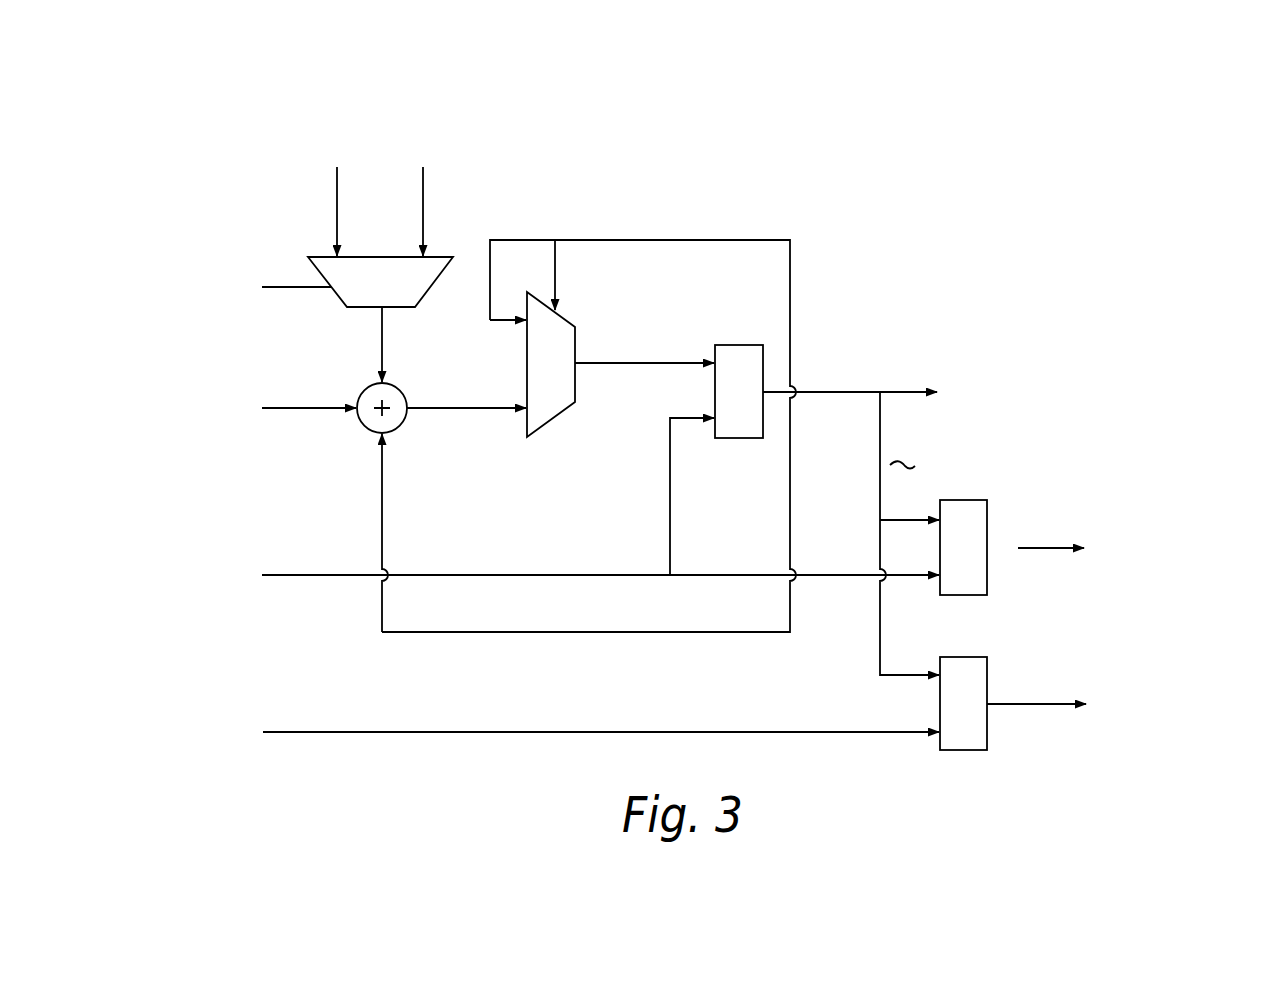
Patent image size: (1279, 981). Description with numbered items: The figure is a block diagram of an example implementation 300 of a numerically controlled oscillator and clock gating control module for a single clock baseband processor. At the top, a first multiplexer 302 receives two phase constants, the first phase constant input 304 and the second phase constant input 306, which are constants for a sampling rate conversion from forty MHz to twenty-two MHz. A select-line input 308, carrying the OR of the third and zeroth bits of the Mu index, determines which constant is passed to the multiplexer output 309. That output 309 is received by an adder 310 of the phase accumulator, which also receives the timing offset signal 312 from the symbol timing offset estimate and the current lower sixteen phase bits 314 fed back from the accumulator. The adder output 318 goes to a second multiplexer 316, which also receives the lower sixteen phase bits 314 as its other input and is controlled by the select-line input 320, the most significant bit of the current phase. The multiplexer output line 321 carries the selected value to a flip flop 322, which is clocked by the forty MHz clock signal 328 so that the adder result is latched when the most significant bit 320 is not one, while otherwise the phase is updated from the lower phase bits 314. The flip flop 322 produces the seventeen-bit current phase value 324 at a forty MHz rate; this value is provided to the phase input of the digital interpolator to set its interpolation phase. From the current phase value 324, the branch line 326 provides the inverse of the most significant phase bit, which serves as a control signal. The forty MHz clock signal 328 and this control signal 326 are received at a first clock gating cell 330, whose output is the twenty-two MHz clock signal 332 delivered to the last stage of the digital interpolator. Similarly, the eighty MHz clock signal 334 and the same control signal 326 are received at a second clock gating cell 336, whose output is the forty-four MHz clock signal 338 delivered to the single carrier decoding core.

The example implementation of NCO and clock gating control module 300 is at (165, 108).
The first multiplexer 302 is at (390, 256).
The 0xd174 phase constant input 304 is at (325, 131).
The 0xd175 phase constant input 306 is at (440, 134).
The select-line input 308 is at (167, 262).
The output of first multiplexer 309 is at (387, 340).
The adder 310 is at (367, 389).
The Mu_tr[16:0] timing offset signal 312 is at (153, 390).
The Mu[15:0] value 314 is at (517, 207).
The second multiplexer 316 is at (578, 380).
The output of adder 318 is at (524, 412).
The mu[16] select-line input 320 is at (557, 283).
The multiplexer output line 321 is at (662, 333).
The flip flop 322 is at (745, 440).
The Mu[16:0] value 324 is at (990, 375).
The inverse of Mu[16] value 326 is at (880, 467).
The CK40M signal 328 is at (213, 555).
The first clock gating cell 330 is at (987, 517).
The CK22M signal 332 is at (1133, 530).
The CK80M signal 334 is at (208, 712).
The second clock gating cell 336 is at (987, 672).
The CK44M signal 338 is at (1135, 685).